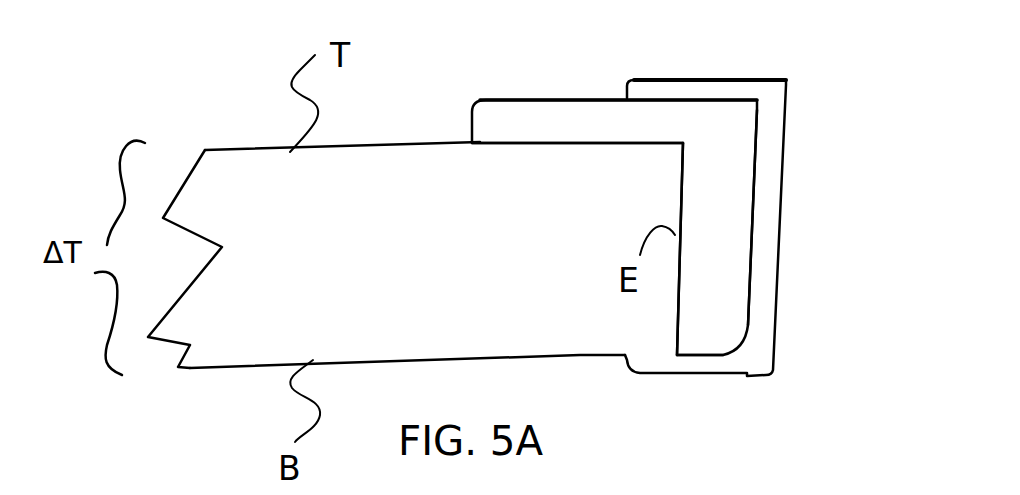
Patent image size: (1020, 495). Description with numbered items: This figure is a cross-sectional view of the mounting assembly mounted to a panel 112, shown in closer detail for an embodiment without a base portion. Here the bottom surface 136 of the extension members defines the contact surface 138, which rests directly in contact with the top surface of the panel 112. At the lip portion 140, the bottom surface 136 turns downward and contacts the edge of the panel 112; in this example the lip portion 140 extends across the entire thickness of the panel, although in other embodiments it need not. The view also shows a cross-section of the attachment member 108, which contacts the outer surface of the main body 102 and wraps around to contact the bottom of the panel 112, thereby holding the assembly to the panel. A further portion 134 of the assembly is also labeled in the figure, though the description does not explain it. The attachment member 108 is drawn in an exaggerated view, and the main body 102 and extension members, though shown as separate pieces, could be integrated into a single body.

The main body 102 is at (580, 97).
The attachment member 108 is at (789, 113).
The panel 112 is at (353, 288).
The outer wall 134 is at (755, 200).
The bottom surface 136 is at (687, 170).
The contact surface 138 is at (560, 145).
The lip portion 140 is at (707, 293).